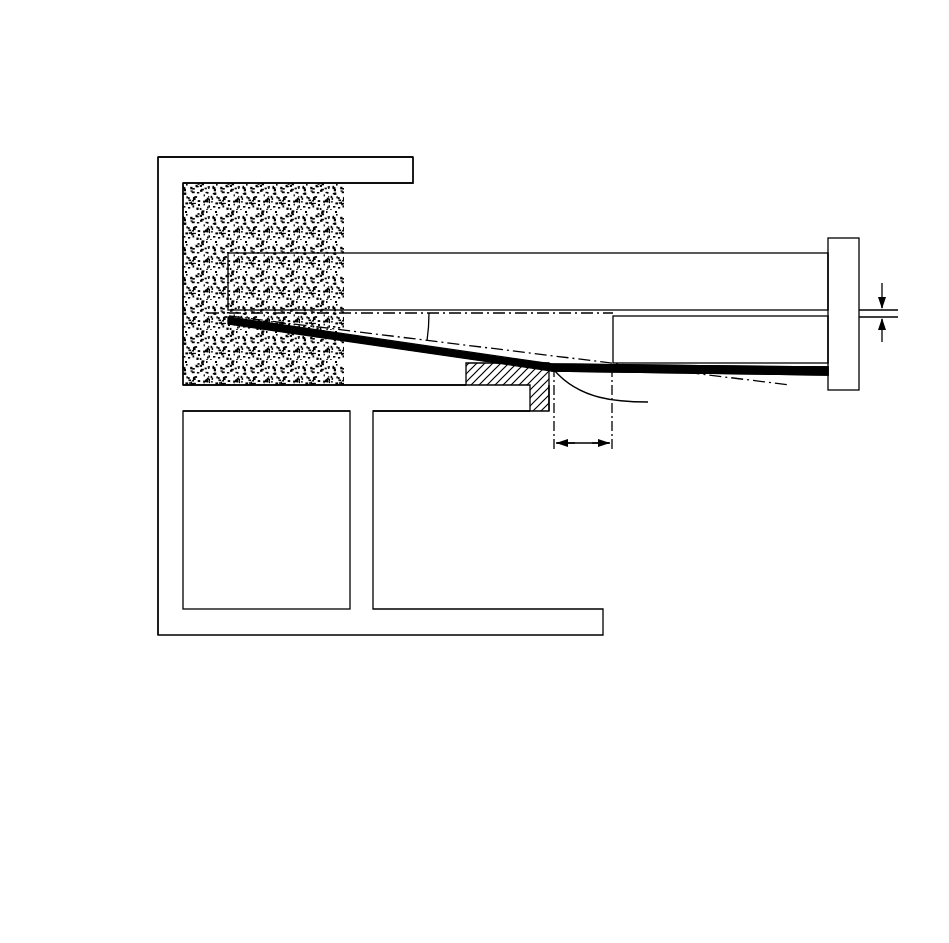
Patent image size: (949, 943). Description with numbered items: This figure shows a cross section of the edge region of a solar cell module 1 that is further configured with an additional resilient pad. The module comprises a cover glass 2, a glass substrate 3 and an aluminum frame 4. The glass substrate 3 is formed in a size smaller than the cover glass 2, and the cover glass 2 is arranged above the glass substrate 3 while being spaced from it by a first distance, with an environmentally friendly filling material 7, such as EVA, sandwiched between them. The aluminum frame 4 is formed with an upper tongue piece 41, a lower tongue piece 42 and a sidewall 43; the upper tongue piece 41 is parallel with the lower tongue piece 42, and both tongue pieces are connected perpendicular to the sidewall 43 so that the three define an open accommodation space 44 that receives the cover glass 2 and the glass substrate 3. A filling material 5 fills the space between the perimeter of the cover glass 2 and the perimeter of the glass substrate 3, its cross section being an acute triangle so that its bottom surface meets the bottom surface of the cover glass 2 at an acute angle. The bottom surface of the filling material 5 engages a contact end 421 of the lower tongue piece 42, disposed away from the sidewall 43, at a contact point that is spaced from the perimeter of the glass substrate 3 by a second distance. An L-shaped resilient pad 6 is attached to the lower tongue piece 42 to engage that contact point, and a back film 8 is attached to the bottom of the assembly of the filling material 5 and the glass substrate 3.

The solar cell module 1 is at (650, 107).
The cover glass 2 is at (684, 250).
The glass substrate 3 is at (708, 340).
The aluminum frame 4 is at (156, 483).
The upper tongue piece 41 is at (293, 157).
The lower tongue piece 42 is at (413, 411).
The contact end 421 is at (512, 411).
The sidewall 43 is at (158, 283).
The open accommodation space 44 is at (358, 222).
The filling material 5 is at (500, 337).
The resilient pad 6 is at (539, 414).
The environmentally friendly filling material 7 is at (760, 308).
The back film 8 is at (797, 377).